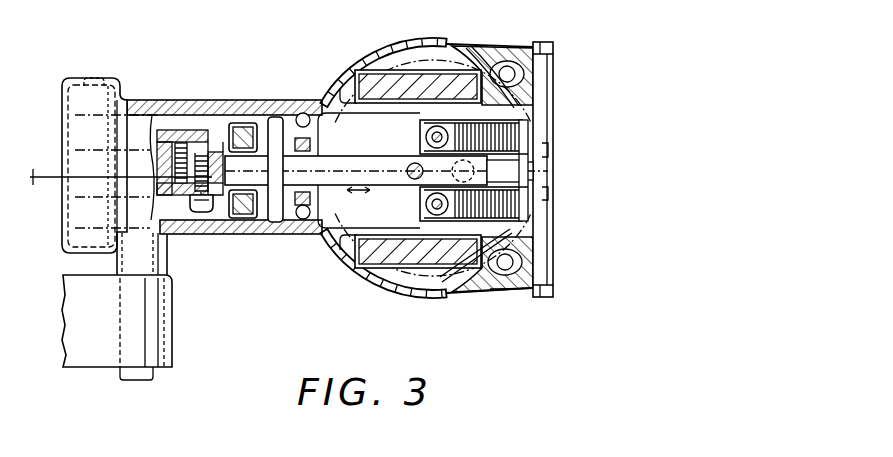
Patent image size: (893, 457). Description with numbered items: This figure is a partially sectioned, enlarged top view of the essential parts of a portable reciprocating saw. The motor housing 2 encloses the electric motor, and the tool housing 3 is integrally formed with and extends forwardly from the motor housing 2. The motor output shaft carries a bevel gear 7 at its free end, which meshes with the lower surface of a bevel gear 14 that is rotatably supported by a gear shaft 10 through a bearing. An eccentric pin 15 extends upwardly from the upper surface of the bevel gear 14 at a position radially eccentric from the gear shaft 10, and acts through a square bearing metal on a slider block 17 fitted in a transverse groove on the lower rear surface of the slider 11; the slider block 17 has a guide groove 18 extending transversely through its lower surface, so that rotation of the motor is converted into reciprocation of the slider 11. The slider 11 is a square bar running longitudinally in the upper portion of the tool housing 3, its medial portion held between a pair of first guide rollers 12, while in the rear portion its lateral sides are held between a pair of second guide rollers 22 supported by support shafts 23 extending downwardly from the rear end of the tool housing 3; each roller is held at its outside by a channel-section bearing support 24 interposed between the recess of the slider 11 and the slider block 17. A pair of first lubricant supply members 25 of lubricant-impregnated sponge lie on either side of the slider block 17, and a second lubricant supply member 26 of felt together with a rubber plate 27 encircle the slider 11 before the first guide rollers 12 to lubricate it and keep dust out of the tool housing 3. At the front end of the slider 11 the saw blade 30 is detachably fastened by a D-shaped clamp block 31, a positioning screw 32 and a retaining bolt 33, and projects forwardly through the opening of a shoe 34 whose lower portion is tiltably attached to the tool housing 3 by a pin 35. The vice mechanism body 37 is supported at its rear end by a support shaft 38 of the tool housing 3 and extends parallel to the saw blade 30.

The motor housing 2 is at (549, 52).
The tool housing 3 is at (508, 60).
The bevel gear 7 is at (535, 168).
The gear shaft 10 is at (386, 153).
The slider 11 is at (365, 158).
The first guide rollers 12 is at (291, 235).
The bevel gear 14 is at (527, 204).
The eccentric pin 15 is at (530, 141).
The slider block 17 is at (520, 115).
The guide groove 18 is at (506, 280).
The second guide rollers 22 is at (475, 77).
The support shafts 23 is at (435, 126).
The bearing support 24 is at (528, 212).
The first lubricant supply members 25 is at (417, 73).
The second lubricant supply member 26 is at (239, 123).
The rubber plate 27 is at (262, 117).
The saw blade 30 is at (33, 180).
The clamp block 31 is at (180, 234).
The positioning screw 32 is at (185, 130).
The retaining bolt 33 is at (208, 234).
The shoe 34 is at (62, 133).
The pin 35 is at (93, 78).
The body 37 is at (93, 358).
The support shaft 38 is at (162, 292).